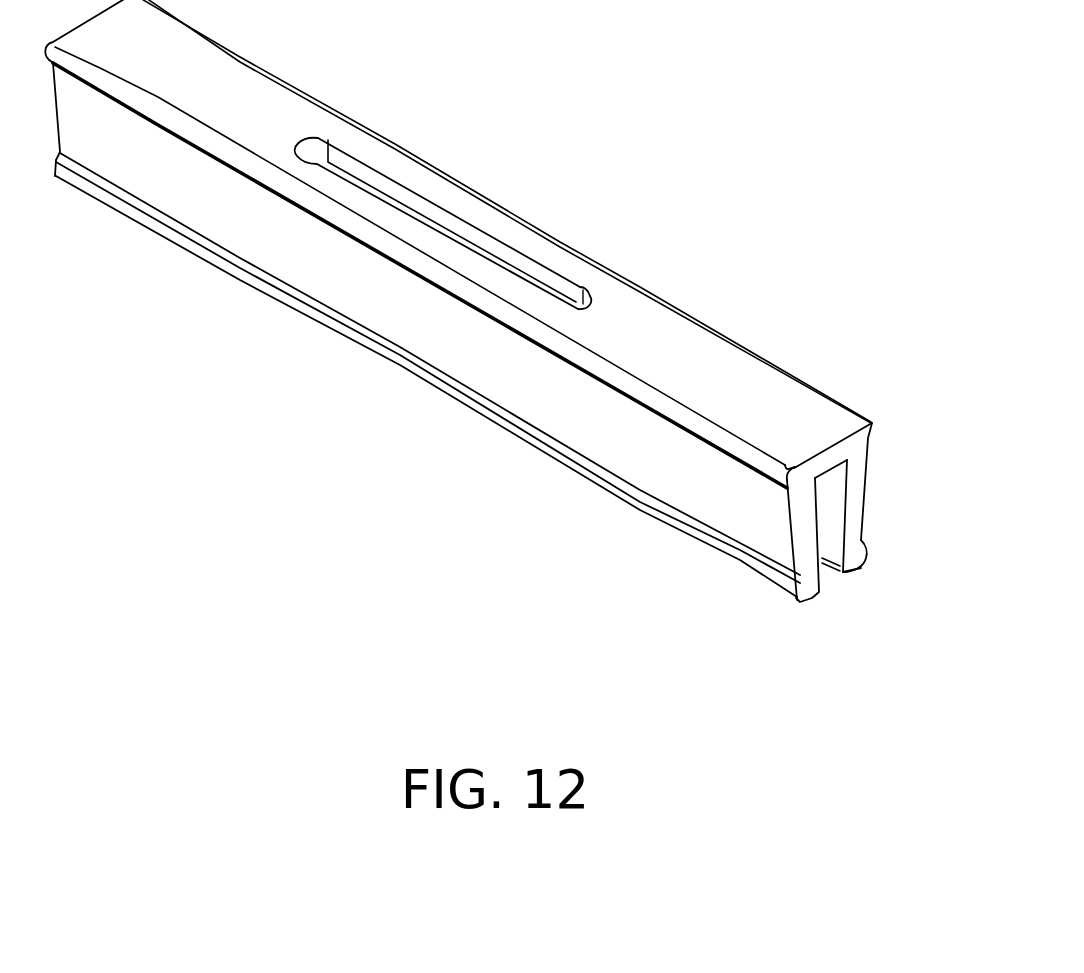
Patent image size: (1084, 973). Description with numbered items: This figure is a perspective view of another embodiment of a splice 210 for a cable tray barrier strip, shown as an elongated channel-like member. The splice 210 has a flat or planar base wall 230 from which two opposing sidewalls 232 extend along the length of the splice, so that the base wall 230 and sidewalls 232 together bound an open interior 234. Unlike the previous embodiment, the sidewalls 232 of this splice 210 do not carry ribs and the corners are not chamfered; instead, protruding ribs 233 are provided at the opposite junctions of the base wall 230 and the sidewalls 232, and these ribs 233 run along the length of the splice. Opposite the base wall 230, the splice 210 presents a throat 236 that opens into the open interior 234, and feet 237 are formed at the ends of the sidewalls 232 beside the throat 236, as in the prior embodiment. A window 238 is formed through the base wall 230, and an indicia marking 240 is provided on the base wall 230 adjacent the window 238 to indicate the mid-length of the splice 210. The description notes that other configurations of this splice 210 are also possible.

The splice 210 is at (662, 140).
The base wall 230 is at (757, 389).
The sidewalls 232 is at (631, 453).
The protruding ribs 233 is at (566, 349).
The open interior 234 is at (833, 503).
The throat 236 is at (836, 571).
The feet 237 is at (867, 557).
The window 238 is at (397, 196).
The indicia marking 240 is at (474, 224).